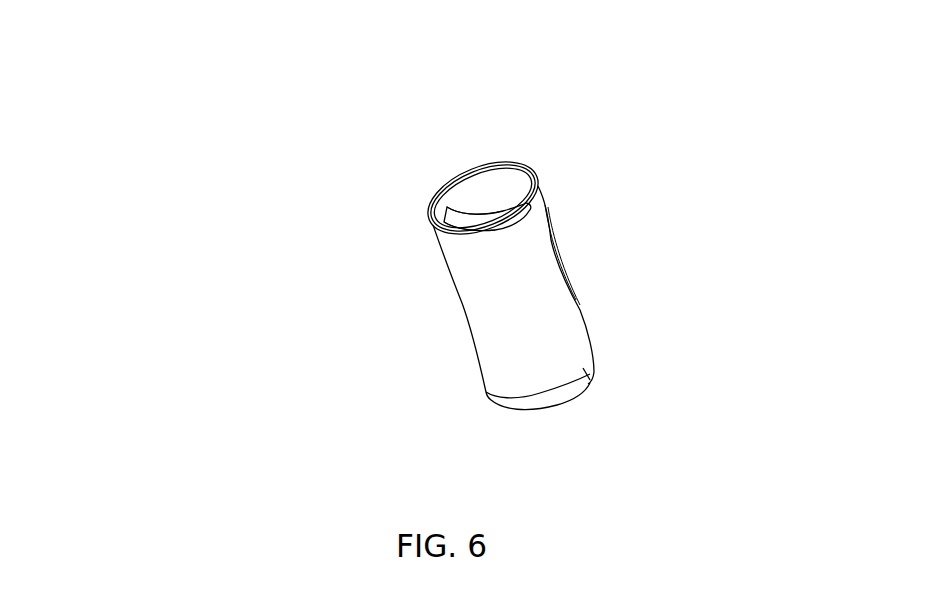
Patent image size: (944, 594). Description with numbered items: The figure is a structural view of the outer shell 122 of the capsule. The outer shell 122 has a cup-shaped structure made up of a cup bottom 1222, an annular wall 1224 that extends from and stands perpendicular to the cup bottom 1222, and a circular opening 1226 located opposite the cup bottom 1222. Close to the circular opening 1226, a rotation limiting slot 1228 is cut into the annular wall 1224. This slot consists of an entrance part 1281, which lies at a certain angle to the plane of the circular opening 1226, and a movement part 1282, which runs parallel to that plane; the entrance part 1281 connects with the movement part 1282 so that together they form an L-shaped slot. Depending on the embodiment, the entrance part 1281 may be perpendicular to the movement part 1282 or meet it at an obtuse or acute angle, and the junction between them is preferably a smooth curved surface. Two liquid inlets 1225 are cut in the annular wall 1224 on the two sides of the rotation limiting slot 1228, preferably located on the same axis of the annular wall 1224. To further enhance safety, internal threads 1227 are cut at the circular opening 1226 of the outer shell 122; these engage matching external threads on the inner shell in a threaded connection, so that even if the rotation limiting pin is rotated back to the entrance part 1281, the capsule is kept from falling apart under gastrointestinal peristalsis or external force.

The outer shell 122 is at (570, 64).
The cup bottom 1222 is at (583, 368).
The annular wall 1224 is at (502, 358).
The liquid inlets 1225 is at (460, 307).
The circular opening 1226 is at (513, 197).
The internal threads 1227 is at (497, 167).
The rotation limiting slot 1228 is at (480, 220).
The entrance part 1281 is at (433, 212).
The movement part 1282 is at (478, 240).